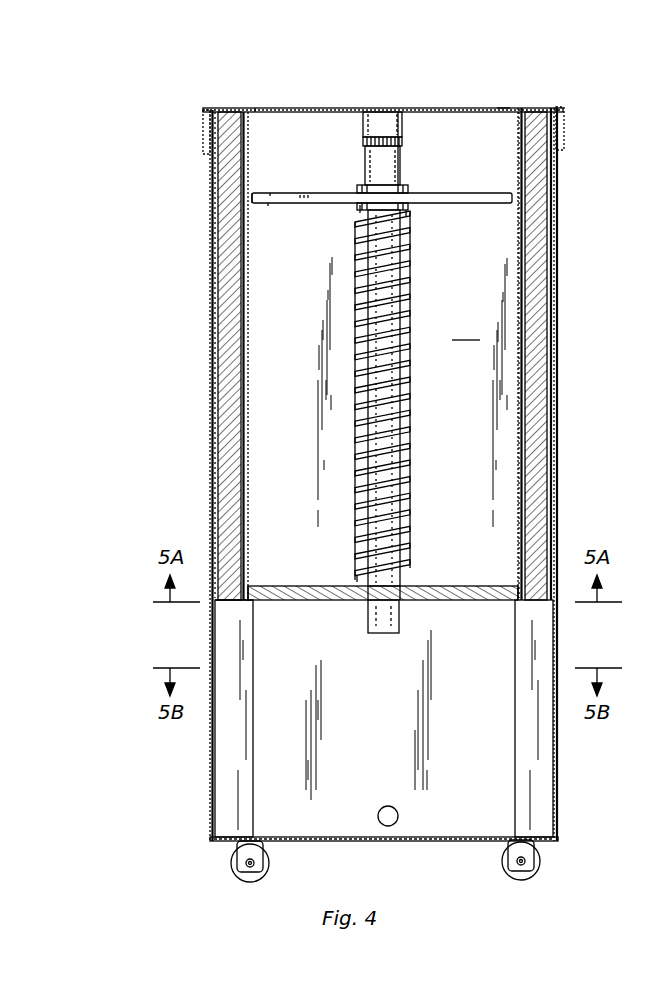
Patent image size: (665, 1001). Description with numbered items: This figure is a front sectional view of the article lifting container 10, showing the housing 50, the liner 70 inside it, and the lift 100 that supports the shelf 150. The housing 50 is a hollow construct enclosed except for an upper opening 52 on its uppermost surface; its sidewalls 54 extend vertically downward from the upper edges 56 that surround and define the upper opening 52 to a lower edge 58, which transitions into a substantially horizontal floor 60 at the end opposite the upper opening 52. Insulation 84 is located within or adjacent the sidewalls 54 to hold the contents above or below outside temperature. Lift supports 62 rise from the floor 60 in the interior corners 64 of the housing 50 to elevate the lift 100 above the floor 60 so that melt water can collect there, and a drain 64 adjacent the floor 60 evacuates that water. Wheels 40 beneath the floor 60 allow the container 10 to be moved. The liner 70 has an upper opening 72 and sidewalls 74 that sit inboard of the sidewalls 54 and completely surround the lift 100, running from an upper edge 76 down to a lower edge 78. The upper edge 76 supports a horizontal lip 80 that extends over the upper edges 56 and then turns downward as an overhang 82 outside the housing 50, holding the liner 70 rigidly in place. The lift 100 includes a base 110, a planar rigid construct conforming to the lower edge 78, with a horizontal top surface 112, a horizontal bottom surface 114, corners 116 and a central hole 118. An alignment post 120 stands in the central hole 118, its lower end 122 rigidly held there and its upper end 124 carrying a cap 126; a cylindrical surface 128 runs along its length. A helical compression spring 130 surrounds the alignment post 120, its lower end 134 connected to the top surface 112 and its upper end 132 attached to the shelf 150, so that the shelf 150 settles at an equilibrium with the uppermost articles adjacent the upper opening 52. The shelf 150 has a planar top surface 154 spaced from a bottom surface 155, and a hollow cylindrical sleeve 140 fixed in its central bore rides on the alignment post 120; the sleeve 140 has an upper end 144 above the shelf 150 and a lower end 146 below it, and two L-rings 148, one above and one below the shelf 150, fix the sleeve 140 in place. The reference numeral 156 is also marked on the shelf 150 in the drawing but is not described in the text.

The article lifting container 10 is at (103, 384).
The wheels 40 is at (270, 863).
The housing 50 is at (582, 351).
The upper opening 52 is at (307, 110).
The sidewalls 54 is at (195, 475).
The upper edges 56 is at (205, 114).
The lower edge 58 is at (346, 827).
The floor 60 is at (322, 836).
The lift supports 62 is at (253, 735).
The drain 64 is at (400, 817).
The liner 70 is at (245, 256).
The upper opening 72 is at (500, 102).
The sidewalls 74 is at (466, 330).
The upper edge 76 is at (255, 111).
The lower edge 78 is at (250, 602).
The horizontal lip 80 is at (545, 108).
The overhang 82 is at (564, 126).
The insulation 84 is at (232, 412).
The lift 100 is at (272, 301).
The base 110 is at (276, 602).
The top surface 112 is at (275, 590).
The bottom surface 114 is at (408, 600).
The corners 116 is at (517, 586).
The central hole 118 is at (401, 626).
The alignment post 120 is at (403, 434).
The lower end 122 is at (368, 606).
The upper end 124 is at (403, 131).
The cap 126 is at (400, 110).
The cylindrical surface 128 is at (419, 395).
The spring 130 is at (403, 408).
The upper end 132 is at (362, 206).
The lower end 134 is at (410, 581).
The hollow cylindrical sleeve 140 is at (402, 172).
The upper end 144 is at (362, 141).
The lower end 146 is at (408, 217).
The L-rings 148 is at (405, 188).
The shelf 150 is at (262, 176).
The top surface 154 is at (306, 193).
The bottom surface 155 is at (268, 204).
The shelf left end 156 is at (250, 198).